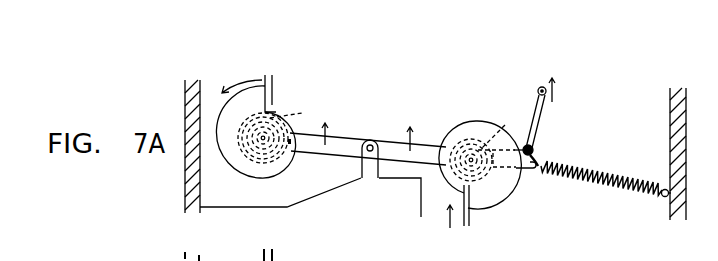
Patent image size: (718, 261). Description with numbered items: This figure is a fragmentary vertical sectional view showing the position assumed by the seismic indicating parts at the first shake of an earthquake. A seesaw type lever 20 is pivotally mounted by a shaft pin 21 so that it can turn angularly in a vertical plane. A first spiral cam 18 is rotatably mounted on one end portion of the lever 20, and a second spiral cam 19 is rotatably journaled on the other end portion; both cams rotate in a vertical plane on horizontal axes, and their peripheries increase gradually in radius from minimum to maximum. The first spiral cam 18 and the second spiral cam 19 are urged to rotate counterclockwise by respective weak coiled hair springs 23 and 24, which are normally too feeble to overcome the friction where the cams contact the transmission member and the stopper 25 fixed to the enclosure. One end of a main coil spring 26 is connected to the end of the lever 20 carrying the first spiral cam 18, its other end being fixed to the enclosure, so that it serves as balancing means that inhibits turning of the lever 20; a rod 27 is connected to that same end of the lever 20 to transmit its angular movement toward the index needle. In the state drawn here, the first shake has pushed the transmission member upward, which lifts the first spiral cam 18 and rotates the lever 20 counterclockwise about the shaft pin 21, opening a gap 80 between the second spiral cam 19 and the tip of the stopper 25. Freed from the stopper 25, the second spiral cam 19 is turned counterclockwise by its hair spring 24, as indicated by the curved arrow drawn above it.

The second spiral cam 19 is at (228, 127).
The stopper 25 is at (265, 88).
The gap 80 is at (276, 112).
The hair spring 24 is at (277, 119).
The seesaw type lever 20 is at (352, 138).
The shaft pin 21 is at (378, 140).
The first spiral cam 18 is at (483, 123).
The hair spring 23 is at (505, 125).
The rod 27 is at (541, 112).
The main coil spring 26 is at (608, 174).